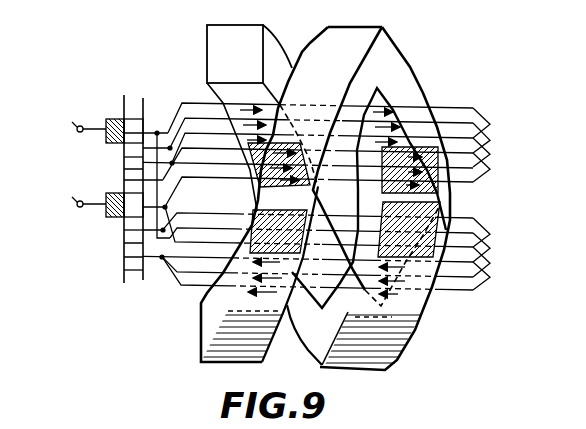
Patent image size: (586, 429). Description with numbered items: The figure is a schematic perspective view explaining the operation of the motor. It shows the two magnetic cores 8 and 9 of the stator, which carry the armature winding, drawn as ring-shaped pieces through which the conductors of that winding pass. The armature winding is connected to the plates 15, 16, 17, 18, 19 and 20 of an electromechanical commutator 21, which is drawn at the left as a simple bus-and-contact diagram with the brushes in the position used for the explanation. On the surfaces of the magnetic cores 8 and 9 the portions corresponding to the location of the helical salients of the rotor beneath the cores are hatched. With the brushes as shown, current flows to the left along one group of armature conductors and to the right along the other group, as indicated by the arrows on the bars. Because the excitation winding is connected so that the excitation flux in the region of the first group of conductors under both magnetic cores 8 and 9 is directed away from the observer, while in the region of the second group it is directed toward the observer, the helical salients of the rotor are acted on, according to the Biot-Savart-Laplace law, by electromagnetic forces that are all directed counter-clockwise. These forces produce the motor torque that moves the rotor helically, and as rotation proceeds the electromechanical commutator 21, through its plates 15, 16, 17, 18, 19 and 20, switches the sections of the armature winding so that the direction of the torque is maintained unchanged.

The magnetic core 8 is at (207, 43).
The magnetic core 9 is at (328, 42).
The plate 15 is at (143, 122).
The plate 16 is at (124, 159).
The plate 17 is at (124, 182).
The plate 18 is at (124, 222).
The plate 19 is at (124, 247).
The plate 20 is at (124, 270).
The electromechanical commutator 21 is at (124, 110).